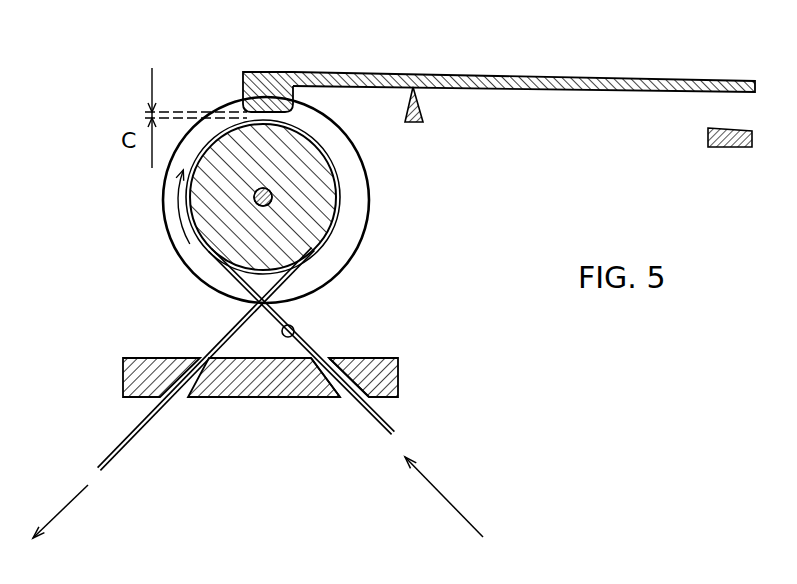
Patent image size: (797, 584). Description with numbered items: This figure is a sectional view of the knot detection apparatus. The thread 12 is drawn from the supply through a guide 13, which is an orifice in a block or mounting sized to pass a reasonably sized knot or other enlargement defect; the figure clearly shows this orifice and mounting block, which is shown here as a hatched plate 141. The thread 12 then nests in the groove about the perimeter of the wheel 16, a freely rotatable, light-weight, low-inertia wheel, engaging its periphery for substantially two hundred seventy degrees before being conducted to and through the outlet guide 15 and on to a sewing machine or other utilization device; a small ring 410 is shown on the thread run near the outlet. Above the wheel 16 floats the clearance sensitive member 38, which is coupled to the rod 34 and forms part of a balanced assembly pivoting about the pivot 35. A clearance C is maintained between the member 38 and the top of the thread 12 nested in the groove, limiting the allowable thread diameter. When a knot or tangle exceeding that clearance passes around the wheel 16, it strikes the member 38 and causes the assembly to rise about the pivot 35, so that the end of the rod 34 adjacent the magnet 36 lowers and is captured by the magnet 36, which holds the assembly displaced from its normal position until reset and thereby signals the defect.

The thread 12 is at (348, 222).
The guide 13 is at (348, 400).
The outlet guide 15 is at (205, 355).
The wheel 16 is at (369, 193).
The rod 34 is at (553, 76).
The pivot 35 is at (425, 104).
The magnet 36 is at (710, 149).
The clearance sensitive member 38 is at (243, 86).
The plate 141 is at (399, 388).
The ring 410 is at (296, 328).